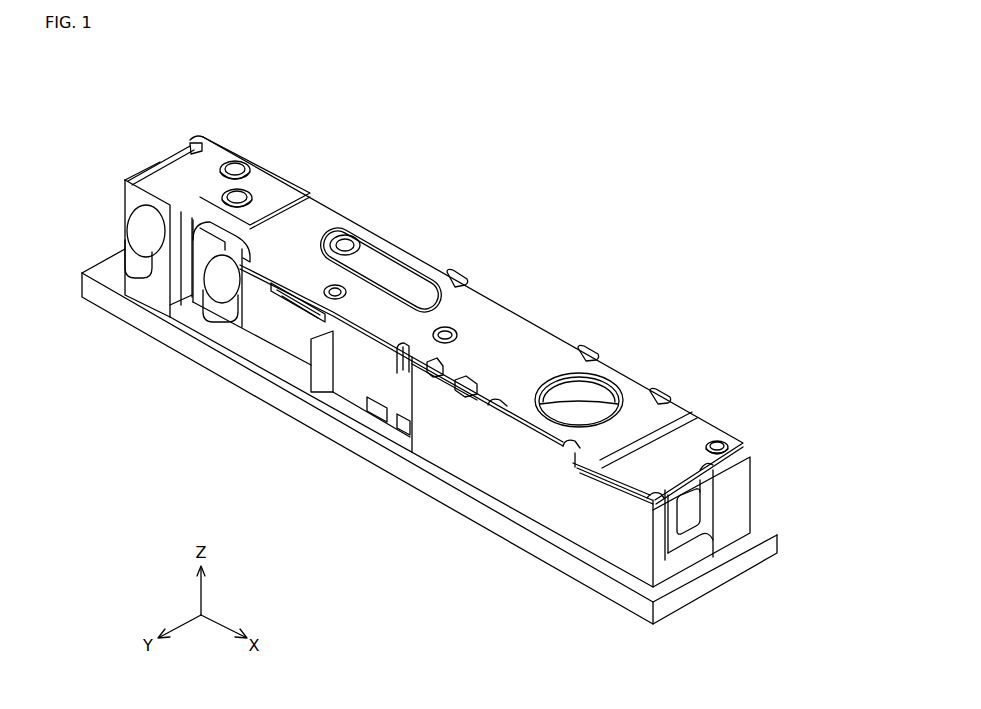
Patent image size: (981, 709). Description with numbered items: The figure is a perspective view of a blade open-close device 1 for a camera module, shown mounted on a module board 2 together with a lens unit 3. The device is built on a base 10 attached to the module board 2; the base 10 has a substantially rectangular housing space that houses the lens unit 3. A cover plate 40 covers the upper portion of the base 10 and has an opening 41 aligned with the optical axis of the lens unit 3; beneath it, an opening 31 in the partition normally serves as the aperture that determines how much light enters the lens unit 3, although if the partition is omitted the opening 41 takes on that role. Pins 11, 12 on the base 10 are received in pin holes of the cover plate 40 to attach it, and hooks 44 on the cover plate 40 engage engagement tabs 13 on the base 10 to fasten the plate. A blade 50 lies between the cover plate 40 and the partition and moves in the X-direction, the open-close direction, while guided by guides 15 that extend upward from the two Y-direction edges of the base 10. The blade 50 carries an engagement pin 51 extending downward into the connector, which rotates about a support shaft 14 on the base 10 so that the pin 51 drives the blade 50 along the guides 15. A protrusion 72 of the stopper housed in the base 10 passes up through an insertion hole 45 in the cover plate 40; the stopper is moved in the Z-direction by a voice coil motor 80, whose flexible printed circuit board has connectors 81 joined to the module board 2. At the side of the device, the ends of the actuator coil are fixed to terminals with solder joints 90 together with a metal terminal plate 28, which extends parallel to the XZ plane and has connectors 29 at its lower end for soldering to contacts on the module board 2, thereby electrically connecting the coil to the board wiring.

The blade open-close device 1 is at (498, 130).
The module board 2 is at (392, 463).
The lens unit 3 is at (590, 410).
The base 10 is at (485, 473).
The pin 11 is at (235, 163).
The pin 12 is at (718, 443).
The engagement tab 13 is at (690, 512).
The support shaft 14 is at (335, 288).
The guide 15 is at (515, 430).
The terminal plate 28 is at (162, 222).
The connector 29 is at (140, 275).
The opening 31 is at (557, 364).
The cover plate 40 is at (675, 405).
The opening 41 is at (481, 353).
The hook 44 is at (678, 542).
The insertion hole 45 is at (465, 395).
The blade 50 is at (380, 236).
The engagement pin 51 is at (345, 240).
The protrusion 72 is at (447, 330).
The voice coil motor 80 is at (347, 407).
The connector 81 is at (377, 410).
The solder joint 90 is at (156, 295).